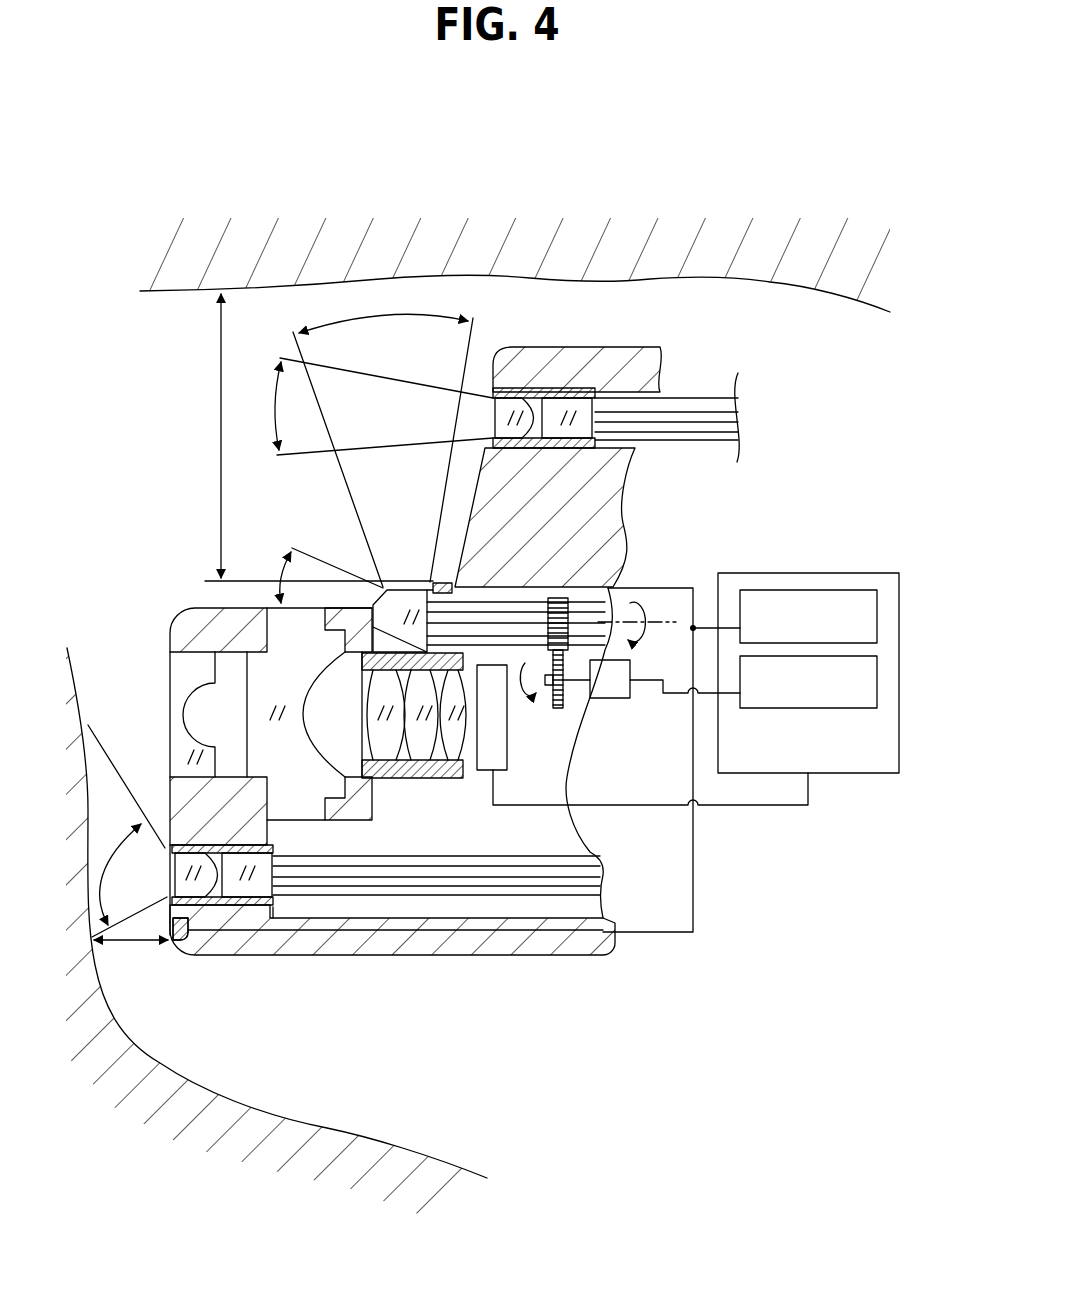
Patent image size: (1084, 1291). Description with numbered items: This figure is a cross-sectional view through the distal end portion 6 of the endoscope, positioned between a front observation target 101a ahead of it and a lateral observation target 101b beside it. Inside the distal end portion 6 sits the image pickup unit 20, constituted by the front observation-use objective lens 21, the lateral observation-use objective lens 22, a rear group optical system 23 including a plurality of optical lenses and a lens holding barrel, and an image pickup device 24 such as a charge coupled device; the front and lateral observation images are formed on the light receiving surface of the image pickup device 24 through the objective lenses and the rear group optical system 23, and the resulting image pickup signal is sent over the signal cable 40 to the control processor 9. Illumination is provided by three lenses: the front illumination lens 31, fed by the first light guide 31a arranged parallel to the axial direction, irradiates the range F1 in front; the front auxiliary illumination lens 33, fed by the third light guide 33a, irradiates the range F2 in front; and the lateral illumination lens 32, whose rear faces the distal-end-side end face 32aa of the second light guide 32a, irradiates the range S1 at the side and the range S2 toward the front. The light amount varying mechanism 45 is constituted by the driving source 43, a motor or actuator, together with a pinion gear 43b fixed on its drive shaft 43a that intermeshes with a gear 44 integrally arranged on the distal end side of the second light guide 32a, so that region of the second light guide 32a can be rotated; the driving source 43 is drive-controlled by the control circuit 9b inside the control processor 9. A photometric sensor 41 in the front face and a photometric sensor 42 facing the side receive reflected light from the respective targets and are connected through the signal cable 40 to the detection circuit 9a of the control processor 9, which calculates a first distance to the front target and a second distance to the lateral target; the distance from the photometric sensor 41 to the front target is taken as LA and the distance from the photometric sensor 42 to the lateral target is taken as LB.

The distal end portion 6 is at (565, 1028).
The control processor 9 is at (840, 573).
The detection circuit 9a is at (878, 614).
The control circuit 9b is at (878, 680).
The image pickup unit 20 is at (217, 1023).
The front observation-use objective lens 21 is at (296, 773).
The lateral observation-use objective lens 22 is at (300, 775).
The rear group optical system 23 is at (367, 757).
The image pickup device 24 is at (485, 767).
The front illumination lens 31 is at (205, 770).
The first light guide 31a is at (540, 857).
The lateral illumination lens 32 is at (385, 607).
The second light guide 32a is at (545, 585).
The distal-end-side end face 32aa is at (413, 615).
The front auxiliary illumination lens 33 is at (607, 388).
The third light guide 33a is at (705, 420).
The signal cable 40 is at (662, 932).
The photometric sensor 41 is at (175, 942).
The photometric sensor 42 is at (431, 626).
The driving source 43 is at (627, 693).
The drive shaft 43a is at (612, 700).
The pinion gear 43b is at (556, 710).
The gear 44 is at (530, 607).
The light amount varying mechanism 45 is at (644, 740).
The front observation target 101a is at (330, 1173).
The lateral observation target 101b is at (548, 232).
The distance LA is at (133, 945).
The distance LB is at (221, 356).
The front illumination range F1 is at (110, 848).
The front auxiliary illumination range F2 is at (369, 406).
The lateral illumination range S1 is at (383, 439).
The forward lateral-lens illumination range S2 is at (286, 572).